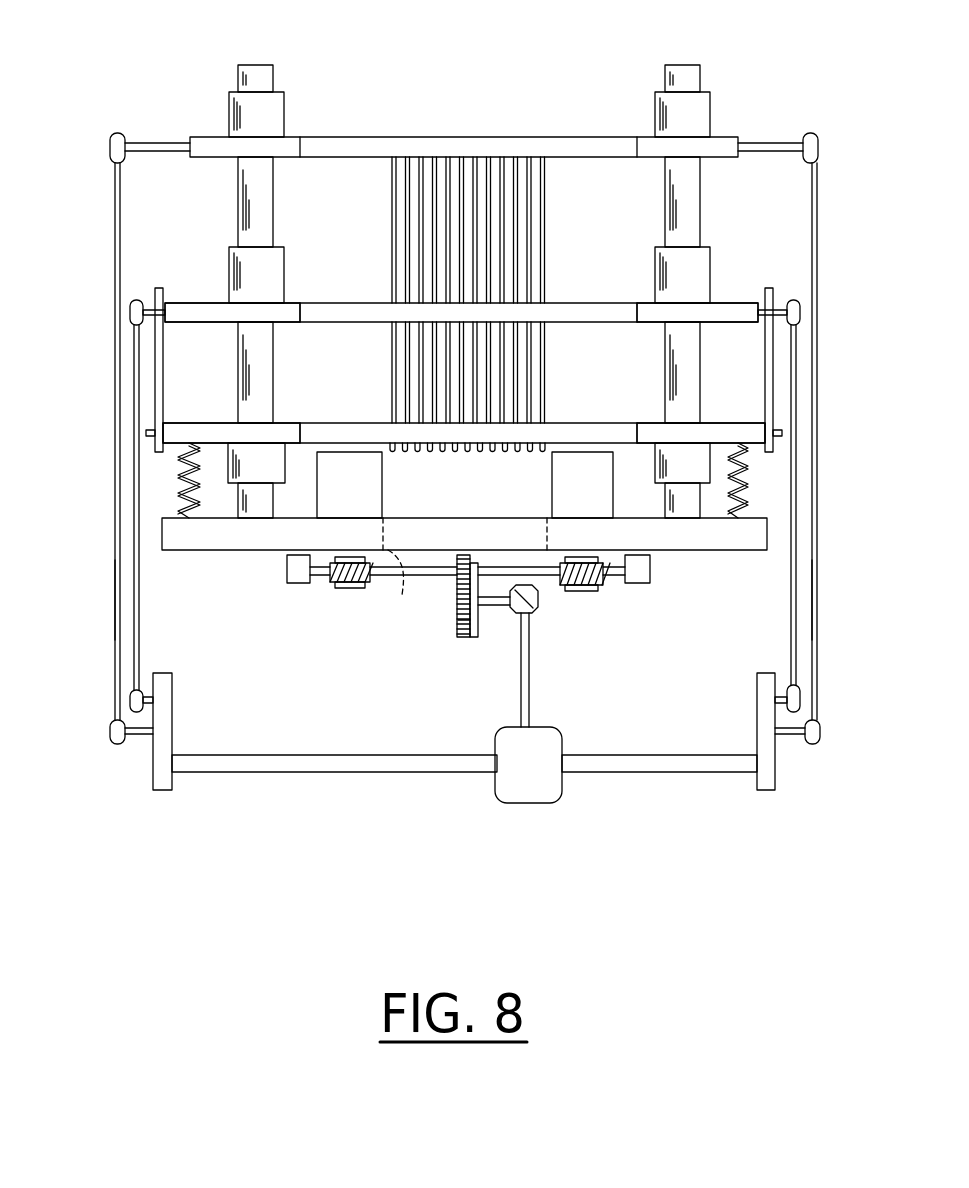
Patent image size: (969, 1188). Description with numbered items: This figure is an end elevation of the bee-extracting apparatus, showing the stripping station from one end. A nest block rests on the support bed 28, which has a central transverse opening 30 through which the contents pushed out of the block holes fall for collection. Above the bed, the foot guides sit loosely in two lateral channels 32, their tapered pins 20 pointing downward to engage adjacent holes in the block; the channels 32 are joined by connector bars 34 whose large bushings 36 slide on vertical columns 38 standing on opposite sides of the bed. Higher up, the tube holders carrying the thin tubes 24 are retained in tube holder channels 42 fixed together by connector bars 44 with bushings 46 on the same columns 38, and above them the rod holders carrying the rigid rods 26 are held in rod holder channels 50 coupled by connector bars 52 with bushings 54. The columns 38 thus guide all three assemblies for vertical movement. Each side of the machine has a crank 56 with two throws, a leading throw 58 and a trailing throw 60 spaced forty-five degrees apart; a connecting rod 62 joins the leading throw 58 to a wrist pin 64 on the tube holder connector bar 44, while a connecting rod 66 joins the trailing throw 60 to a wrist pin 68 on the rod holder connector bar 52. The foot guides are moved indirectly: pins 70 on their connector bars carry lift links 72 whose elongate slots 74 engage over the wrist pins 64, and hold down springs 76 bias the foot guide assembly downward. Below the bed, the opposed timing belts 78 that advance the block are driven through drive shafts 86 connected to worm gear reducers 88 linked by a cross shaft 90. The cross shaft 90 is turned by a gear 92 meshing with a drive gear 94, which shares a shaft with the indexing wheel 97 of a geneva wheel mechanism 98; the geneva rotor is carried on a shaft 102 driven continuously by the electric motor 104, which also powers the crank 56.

The tapered pins 20 is at (423, 452).
The tube 24 is at (430, 397).
The rod 26 is at (435, 250).
The support bed 28 is at (242, 535).
The transverse opening 30 is at (421, 590).
The lateral channels 32 is at (338, 433).
The connector bars 34 is at (277, 438).
The bushings 36 is at (250, 470).
The vertical columns 38 is at (688, 195).
The tube holder channels 42 is at (388, 300).
The connector bars 44 is at (215, 283).
The bushings 46 is at (283, 275).
The rod holder channels 50 is at (483, 143).
The connector bars 52 is at (200, 137).
The bushings 54 is at (272, 120).
The crank 56 is at (145, 786).
The leading throw 58 is at (147, 702).
The trailing throw 60 is at (142, 737).
The connecting rod 62 is at (135, 585).
The wrist pin 64 is at (148, 290).
The connecting rod 66 is at (118, 528).
The wrist pin 68 is at (170, 112).
The pins 70 is at (150, 433).
The lift links 72 is at (155, 378).
The elongate slots 74 is at (145, 350).
The hold down springs 76 is at (175, 475).
The timing belts 78 is at (335, 505).
The drive shaft 86 is at (320, 583).
The worm gear reducer 88 is at (352, 598).
The cross shaft 90 is at (388, 576).
The gear 92 is at (468, 558).
The drive gear 94 is at (465, 640).
The indexing wheel 97 is at (470, 607).
The geneva wheel mechanism 98 is at (493, 579).
The shaft 102 is at (490, 617).
The electric motor 104 is at (538, 760).